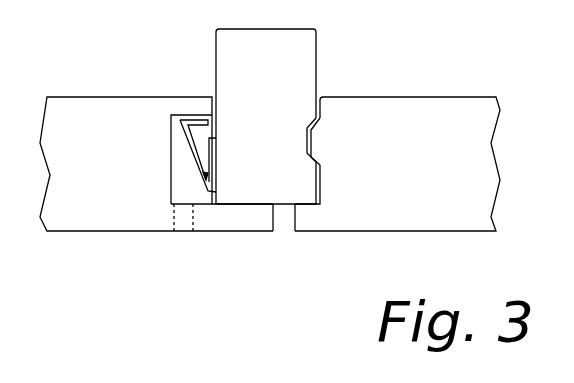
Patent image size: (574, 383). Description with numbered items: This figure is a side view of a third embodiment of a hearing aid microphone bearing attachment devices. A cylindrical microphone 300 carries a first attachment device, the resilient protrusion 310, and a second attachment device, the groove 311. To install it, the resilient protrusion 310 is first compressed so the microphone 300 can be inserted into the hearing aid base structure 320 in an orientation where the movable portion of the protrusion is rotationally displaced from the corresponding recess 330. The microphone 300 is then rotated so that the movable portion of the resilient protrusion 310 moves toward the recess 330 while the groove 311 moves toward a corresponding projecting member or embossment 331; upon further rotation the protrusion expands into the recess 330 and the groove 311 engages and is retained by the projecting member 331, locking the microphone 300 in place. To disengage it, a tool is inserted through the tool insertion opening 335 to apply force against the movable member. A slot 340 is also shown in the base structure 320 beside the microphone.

The cylindrical microphone 300 is at (310, 48).
The resilient protrusion 310 is at (207, 176).
The groove 311 is at (307, 134).
The hearing aid base structure 320 is at (108, 131).
The recess 330 is at (171, 133).
The projecting member 331 is at (311, 138).
The tool insertion opening 335 is at (186, 244).
The slot 340 is at (285, 206).